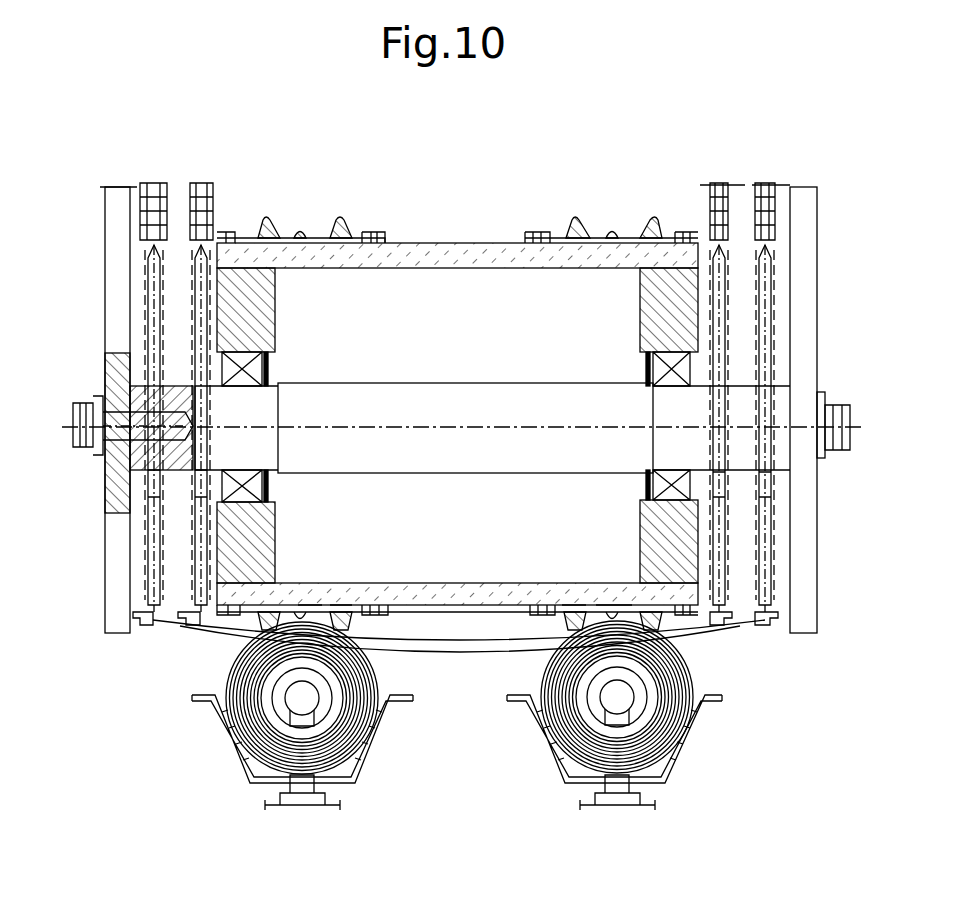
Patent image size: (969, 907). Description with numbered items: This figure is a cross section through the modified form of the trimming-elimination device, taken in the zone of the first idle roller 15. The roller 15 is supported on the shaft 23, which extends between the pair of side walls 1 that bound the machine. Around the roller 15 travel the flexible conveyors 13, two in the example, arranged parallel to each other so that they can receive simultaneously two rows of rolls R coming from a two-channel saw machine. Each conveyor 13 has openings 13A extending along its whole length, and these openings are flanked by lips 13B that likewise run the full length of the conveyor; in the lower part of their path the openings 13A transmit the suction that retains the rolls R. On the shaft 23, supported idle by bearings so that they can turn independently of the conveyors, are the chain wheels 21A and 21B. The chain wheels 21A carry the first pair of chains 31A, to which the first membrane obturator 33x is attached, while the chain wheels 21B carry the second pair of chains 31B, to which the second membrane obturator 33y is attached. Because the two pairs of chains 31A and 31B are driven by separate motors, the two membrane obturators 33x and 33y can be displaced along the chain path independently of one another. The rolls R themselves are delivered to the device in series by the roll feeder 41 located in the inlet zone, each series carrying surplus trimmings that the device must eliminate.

The side walls 1 is at (808, 535).
The flexible conveyors 13 is at (560, 228).
The openings 13A is at (632, 240).
The lips 13B is at (328, 218).
The first idle roller 15 is at (470, 243).
The chain wheels 21A is at (148, 335).
The chain wheels 21B is at (203, 310).
The shaft 23 is at (508, 383).
The chains 31A is at (158, 186).
The chains 31B is at (205, 205).
The first membrane obturator 33x is at (460, 655).
The second membrane obturator 33y is at (450, 638).
The roll feeder 41 is at (285, 790).
The rolls R is at (347, 737).